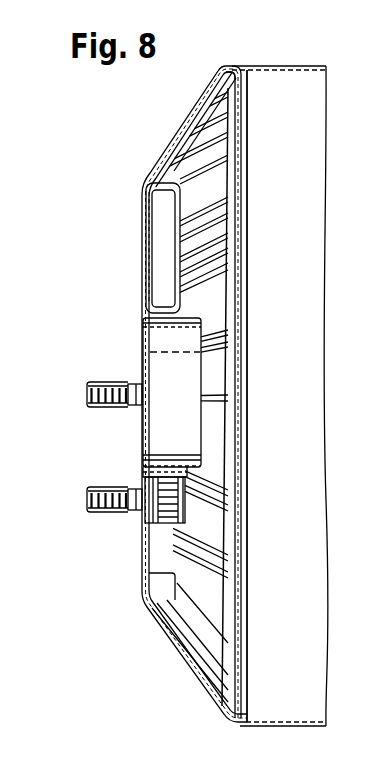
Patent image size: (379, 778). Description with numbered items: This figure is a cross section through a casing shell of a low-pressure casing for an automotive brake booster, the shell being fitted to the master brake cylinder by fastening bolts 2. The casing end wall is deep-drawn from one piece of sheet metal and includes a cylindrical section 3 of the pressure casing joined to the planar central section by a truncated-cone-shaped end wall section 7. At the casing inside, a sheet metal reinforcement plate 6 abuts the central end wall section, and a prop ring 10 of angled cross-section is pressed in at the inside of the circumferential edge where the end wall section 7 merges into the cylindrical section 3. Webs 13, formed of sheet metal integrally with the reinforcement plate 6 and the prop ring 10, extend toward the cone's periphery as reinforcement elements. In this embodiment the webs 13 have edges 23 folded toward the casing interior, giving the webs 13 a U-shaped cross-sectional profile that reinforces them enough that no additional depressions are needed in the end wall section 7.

The fastening bolts 2 is at (102, 381).
The cylindrical section 3 is at (293, 67).
The reinforcement plate 6 is at (173, 215).
The end wall section 7 is at (203, 109).
The prop ring 10 is at (245, 76).
The webs 13 is at (207, 258).
The edges 23 is at (230, 234).